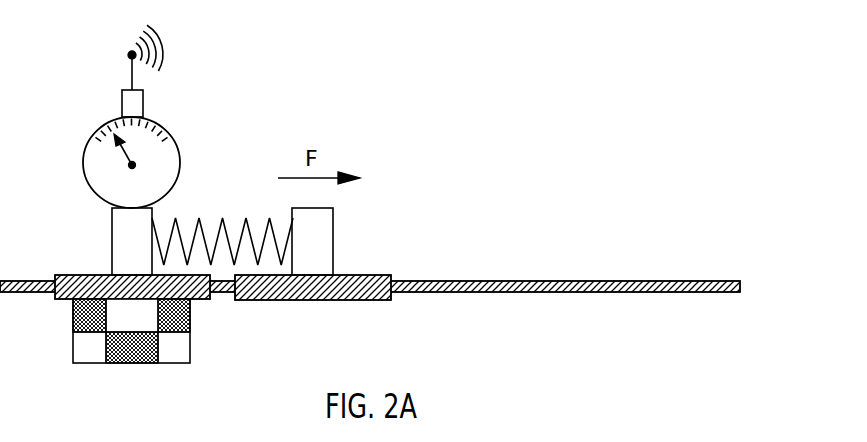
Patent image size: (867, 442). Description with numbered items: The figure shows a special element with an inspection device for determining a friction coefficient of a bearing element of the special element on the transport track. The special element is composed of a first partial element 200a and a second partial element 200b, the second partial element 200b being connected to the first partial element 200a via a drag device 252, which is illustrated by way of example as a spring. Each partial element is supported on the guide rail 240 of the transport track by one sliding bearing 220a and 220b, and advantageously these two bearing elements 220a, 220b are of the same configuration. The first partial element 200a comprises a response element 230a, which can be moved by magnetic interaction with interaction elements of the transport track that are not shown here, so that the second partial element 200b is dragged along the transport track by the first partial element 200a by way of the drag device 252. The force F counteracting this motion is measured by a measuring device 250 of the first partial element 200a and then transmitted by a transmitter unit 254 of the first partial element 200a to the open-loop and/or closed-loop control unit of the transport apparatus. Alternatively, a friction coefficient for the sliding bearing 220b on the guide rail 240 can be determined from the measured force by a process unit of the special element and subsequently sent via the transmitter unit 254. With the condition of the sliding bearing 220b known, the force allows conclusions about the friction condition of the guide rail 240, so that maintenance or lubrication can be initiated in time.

The first partial element 200a is at (143, 315).
The second partial element 200b is at (318, 279).
The sliding bearing 220a is at (203, 300).
The sliding bearing 220b is at (350, 302).
The response element 230a is at (128, 364).
The guide rail 240 is at (688, 280).
The measuring device 250 is at (168, 128).
The drag device 252 is at (220, 220).
The transmitter unit 254 is at (112, 50).